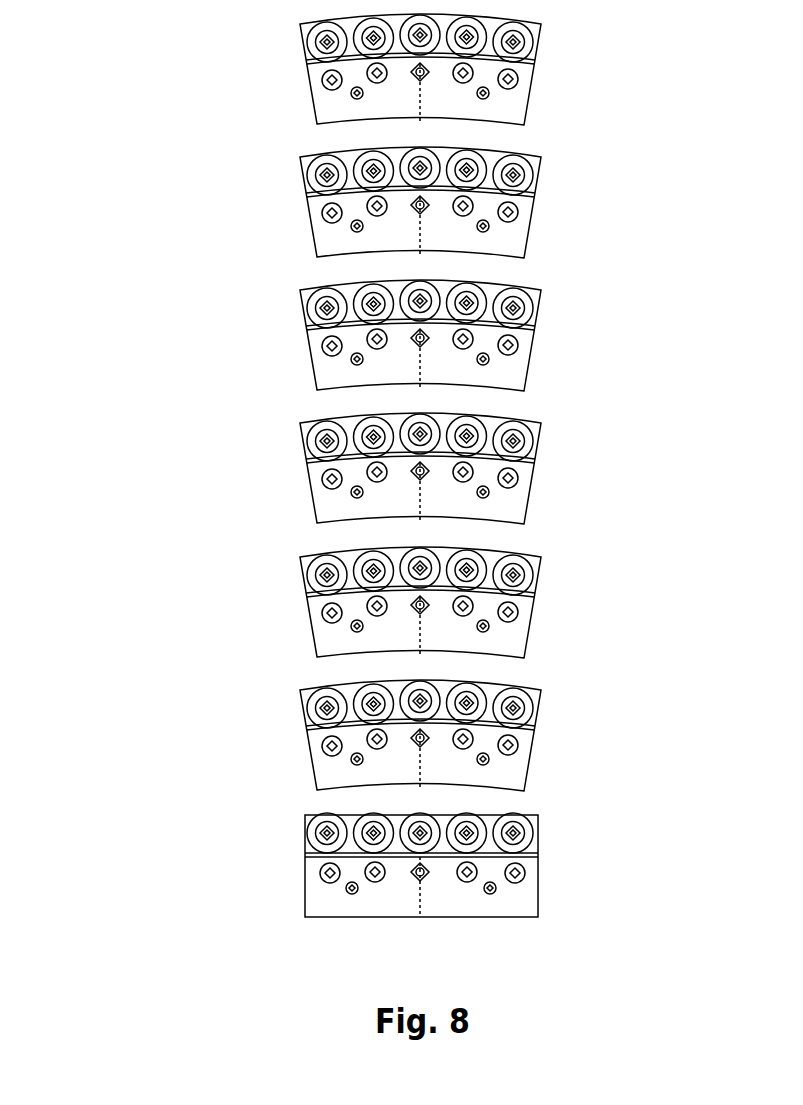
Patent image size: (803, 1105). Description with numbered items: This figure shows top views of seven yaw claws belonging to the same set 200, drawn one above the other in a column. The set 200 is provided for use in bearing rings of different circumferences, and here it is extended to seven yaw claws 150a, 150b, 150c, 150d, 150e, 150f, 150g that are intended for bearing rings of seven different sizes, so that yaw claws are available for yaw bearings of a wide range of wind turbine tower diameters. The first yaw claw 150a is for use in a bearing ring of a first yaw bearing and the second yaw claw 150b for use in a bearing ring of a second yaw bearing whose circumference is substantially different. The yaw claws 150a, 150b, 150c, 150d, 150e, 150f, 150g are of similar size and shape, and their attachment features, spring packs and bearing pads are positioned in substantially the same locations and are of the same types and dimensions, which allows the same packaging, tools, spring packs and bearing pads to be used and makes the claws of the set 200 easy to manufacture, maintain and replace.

The set of yaw claws 200 is at (212, 543).
The first yaw claw 150a is at (494, 69).
The second yaw claw 150b is at (582, 608).
The yaw claw 150c is at (494, 202).
The yaw claw 150d is at (494, 335).
The yaw claw 150e is at (494, 468).
The yaw claw 150f is at (582, 739).
The yaw claw 150g is at (592, 863).